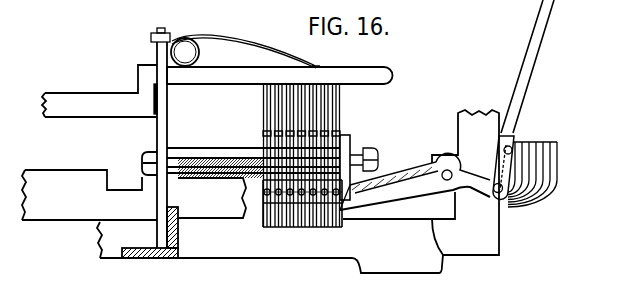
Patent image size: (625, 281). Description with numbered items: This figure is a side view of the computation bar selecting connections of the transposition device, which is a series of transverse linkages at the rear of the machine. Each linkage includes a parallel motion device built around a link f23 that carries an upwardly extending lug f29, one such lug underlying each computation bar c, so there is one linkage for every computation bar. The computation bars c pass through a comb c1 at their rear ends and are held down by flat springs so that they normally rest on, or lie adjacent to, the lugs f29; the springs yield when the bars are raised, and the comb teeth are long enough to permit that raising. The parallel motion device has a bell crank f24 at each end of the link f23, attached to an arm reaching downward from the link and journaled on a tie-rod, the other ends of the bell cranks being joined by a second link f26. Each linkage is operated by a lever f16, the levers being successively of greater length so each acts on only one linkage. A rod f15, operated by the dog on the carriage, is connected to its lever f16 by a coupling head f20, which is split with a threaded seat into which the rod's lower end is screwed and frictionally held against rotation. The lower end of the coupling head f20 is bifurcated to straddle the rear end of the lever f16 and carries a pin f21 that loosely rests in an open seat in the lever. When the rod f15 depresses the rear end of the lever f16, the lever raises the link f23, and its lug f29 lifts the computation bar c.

The computation bar c is at (99, 93).
The comb c1 is at (167, 118).
The rod f15 is at (528, 75).
The lever f16 is at (397, 174).
The coupling head f20 is at (522, 138).
The pin f21 is at (505, 210).
The link f23 is at (330, 140).
The bell crank f24 is at (280, 220).
The second link f26 is at (328, 222).
The lug f29 is at (330, 96).